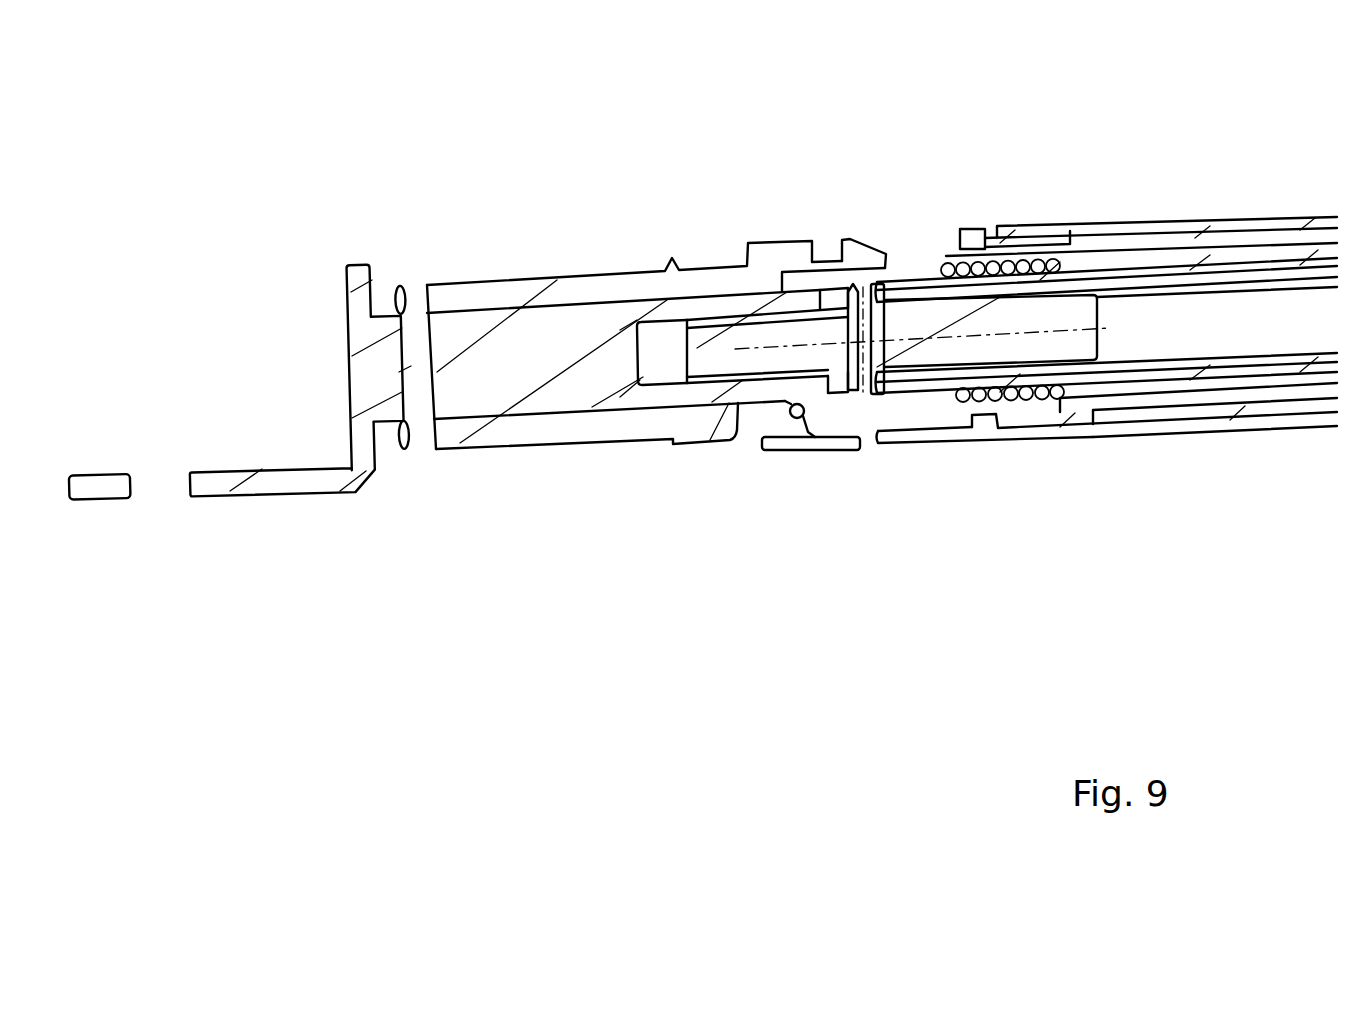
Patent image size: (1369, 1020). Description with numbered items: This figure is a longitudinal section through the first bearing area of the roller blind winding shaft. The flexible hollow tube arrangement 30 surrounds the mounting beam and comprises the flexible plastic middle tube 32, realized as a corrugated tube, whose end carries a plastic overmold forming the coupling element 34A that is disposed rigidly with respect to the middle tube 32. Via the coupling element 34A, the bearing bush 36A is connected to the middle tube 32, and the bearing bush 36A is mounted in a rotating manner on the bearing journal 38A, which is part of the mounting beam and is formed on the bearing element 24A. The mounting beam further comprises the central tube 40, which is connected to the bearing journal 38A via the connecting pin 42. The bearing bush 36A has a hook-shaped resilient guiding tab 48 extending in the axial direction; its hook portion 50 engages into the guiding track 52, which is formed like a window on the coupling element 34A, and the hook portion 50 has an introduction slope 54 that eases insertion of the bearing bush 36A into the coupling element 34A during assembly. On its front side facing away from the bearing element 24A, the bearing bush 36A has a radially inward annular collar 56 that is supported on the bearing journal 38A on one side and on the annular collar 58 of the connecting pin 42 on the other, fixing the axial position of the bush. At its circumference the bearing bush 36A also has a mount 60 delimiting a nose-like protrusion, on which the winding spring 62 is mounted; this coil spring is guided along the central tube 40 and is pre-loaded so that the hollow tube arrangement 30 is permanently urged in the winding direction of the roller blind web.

The bearing element 24A is at (362, 329).
The bearing bush 36A is at (527, 287).
The bearing journal 38A is at (512, 373).
The guiding tab 48 is at (824, 262).
The introduction slope 54 is at (845, 240).
The hook portion 50 is at (864, 260).
The connecting pin 42 is at (910, 316).
The guiding track 52 is at (960, 232).
The middle tube 32 is at (1255, 222).
The mount 60 is at (787, 404).
The winding spring 62 is at (782, 440).
The annular collar 56 is at (842, 392).
The annular collar 58 is at (858, 393).
The coupling element 34A is at (990, 428).
The central tube 40 is at (1165, 366).
The hollow tube arrangement 30 is at (1279, 432).